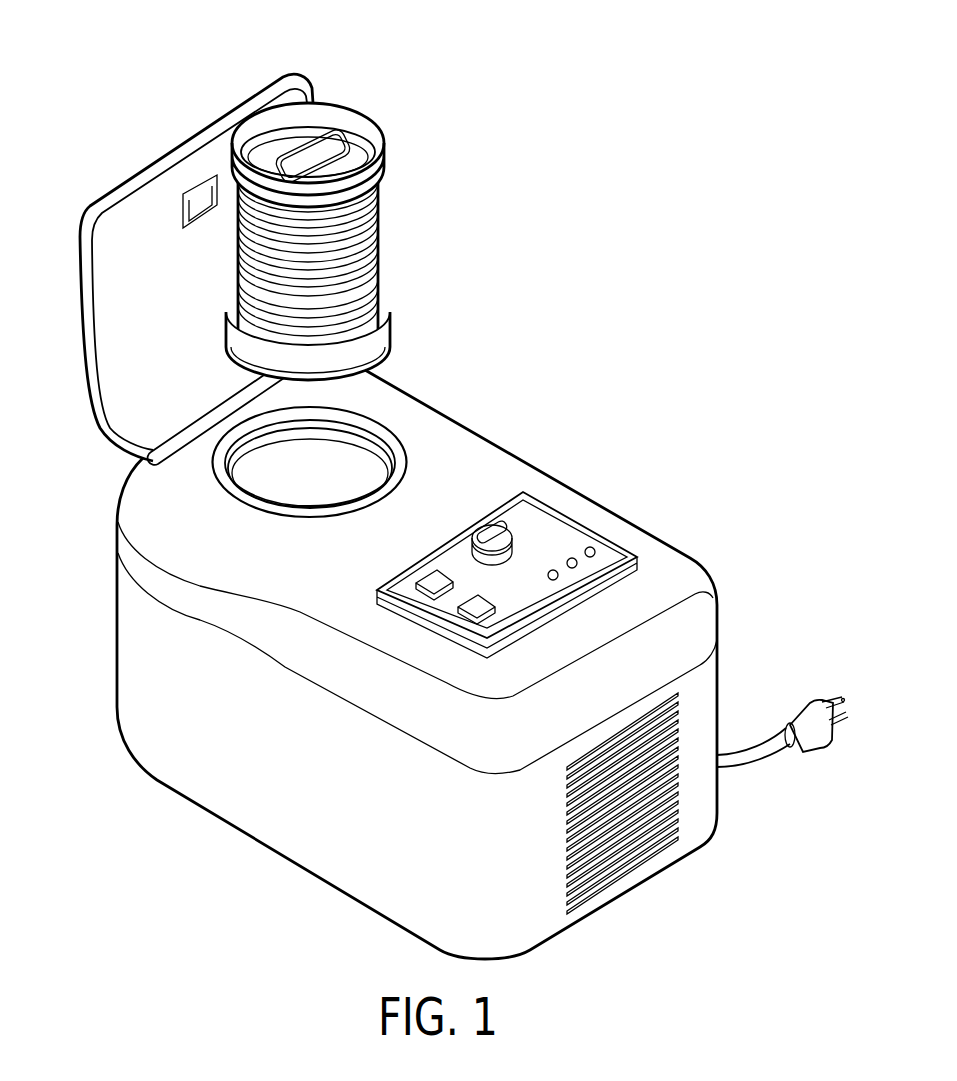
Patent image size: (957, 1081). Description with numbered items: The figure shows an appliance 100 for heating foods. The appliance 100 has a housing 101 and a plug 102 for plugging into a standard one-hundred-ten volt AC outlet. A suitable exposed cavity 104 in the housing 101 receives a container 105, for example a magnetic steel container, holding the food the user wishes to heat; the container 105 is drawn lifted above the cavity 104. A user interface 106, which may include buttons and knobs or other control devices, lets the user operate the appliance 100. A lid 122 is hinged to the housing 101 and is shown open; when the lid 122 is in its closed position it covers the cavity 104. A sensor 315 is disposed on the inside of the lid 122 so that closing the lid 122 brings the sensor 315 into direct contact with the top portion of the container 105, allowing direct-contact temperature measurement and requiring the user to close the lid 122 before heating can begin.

The appliance 100 is at (537, 323).
The housing 101 is at (282, 826).
The plug 102 is at (765, 737).
The exposed cavity 104 is at (298, 490).
The container 105 is at (368, 237).
The user interface 106 is at (560, 537).
The lid 122 is at (223, 97).
The sensor 315 is at (200, 188).